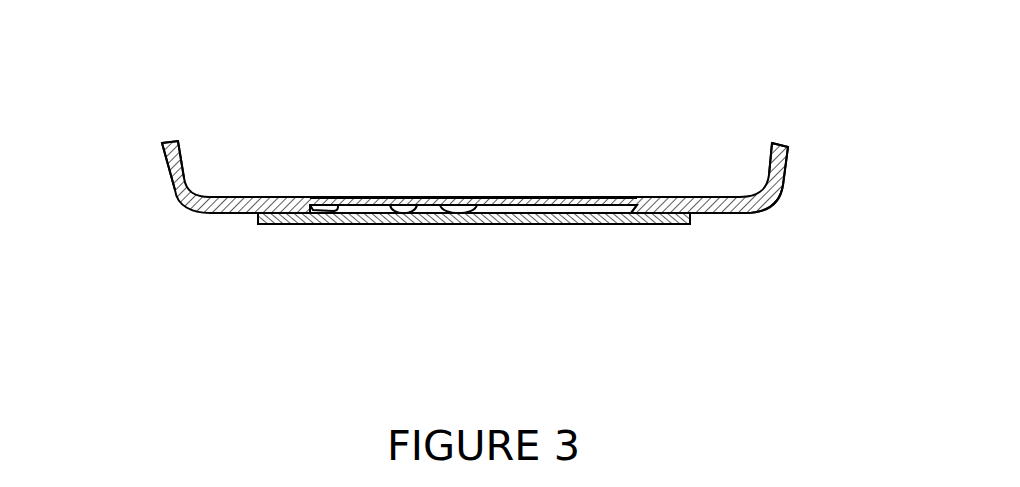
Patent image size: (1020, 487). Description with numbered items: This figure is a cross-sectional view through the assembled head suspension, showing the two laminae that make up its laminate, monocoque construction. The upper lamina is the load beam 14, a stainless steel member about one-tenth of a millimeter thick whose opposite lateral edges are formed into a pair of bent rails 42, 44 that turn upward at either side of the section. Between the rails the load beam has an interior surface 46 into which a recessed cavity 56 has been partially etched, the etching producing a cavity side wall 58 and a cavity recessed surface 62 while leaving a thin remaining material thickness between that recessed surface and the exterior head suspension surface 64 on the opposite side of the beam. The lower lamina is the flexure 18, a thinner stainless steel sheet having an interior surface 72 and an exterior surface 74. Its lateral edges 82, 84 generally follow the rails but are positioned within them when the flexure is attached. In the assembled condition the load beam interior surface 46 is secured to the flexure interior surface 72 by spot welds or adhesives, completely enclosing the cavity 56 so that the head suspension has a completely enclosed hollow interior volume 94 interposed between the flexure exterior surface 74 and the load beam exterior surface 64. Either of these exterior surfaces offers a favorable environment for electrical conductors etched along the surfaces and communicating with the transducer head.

The load beam 14 is at (220, 197).
The flexure 18 is at (355, 225).
The bent rail 42 is at (788, 167).
The bent rail 44 is at (165, 168).
The load beam interior surface 46 is at (735, 216).
The recessed cavity 56 is at (522, 210).
The cavity side wall 58 is at (335, 210).
The cavity recessed surface 62 is at (478, 197).
The exterior head suspension surface 64 is at (420, 197).
The flexure interior surface 72 is at (425, 225).
The flexure exterior surface 74 is at (493, 225).
The flexure lateral edge 82 is at (690, 220).
The flexure lateral edge 84 is at (260, 217).
The enclosed hollow interior volume 94 is at (547, 210).